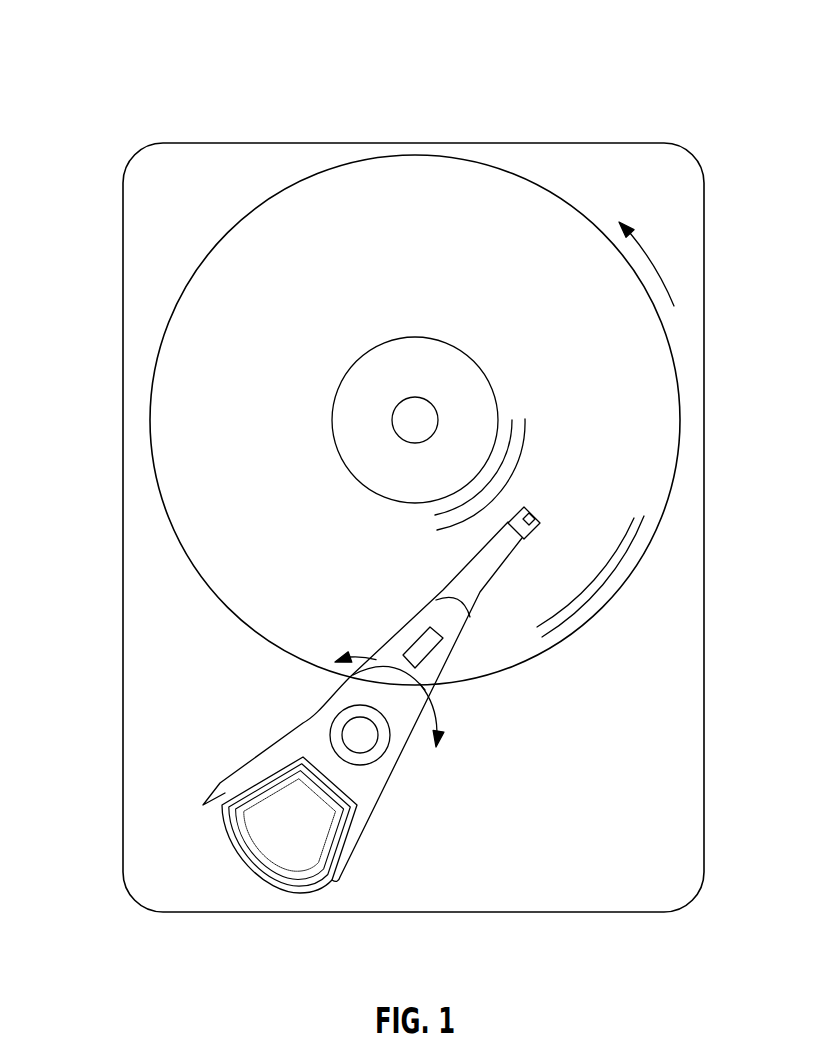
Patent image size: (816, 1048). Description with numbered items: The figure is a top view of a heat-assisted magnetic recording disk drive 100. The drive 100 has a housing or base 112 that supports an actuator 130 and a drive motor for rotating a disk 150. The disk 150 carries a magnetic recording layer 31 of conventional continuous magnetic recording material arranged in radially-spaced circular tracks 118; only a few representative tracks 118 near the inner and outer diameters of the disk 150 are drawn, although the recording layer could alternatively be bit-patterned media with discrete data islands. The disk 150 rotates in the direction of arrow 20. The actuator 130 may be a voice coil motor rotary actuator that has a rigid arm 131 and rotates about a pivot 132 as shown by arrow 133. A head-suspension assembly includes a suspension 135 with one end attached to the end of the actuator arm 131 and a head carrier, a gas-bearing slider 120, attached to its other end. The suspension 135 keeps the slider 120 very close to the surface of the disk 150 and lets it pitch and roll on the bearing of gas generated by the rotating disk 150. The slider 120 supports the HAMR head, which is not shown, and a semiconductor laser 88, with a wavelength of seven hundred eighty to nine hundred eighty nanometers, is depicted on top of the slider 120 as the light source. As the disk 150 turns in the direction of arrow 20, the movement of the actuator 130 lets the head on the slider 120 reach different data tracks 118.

The HAMR disk drive 100 is at (117, 50).
The housing or base 112 is at (633, 143).
The disk 150 is at (274, 197).
The magnetic recording layer 31 is at (657, 385).
The arrow 20 is at (645, 250).
The circular tracks 118 is at (505, 414).
The actuator 130 is at (207, 800).
The rigid arm 131 is at (403, 643).
The pivot 132 is at (352, 733).
The arrow 133 is at (437, 717).
The suspension 135 is at (458, 590).
The gas-bearing slider 120 is at (530, 535).
The semiconductor laser 88 is at (535, 517).